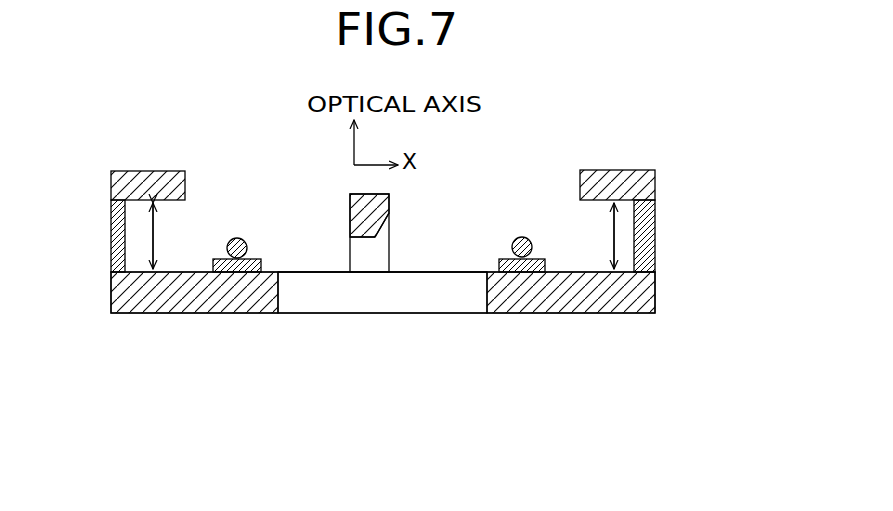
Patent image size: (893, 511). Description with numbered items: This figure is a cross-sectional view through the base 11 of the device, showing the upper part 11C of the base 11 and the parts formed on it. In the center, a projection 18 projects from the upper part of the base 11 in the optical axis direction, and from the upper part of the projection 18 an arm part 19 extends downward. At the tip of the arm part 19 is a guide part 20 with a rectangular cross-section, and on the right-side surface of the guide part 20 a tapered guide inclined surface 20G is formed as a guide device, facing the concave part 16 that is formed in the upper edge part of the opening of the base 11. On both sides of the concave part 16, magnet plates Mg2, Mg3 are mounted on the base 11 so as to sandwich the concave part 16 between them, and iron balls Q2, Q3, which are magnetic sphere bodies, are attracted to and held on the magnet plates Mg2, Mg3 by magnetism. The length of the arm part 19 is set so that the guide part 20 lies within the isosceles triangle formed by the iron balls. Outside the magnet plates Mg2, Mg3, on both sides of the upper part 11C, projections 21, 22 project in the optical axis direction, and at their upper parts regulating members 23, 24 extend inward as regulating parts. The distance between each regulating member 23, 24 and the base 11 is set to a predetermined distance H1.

The base 11 is at (660, 288).
The upper part of the base 11C is at (448, 267).
The concave part 16 is at (453, 293).
The projection 18 is at (363, 257).
The arm part 19 is at (352, 193).
The guide part 20 is at (357, 213).
The guide inclined surface 20G is at (389, 225).
The projection 21 is at (110, 258).
The projection 22 is at (645, 243).
The regulating member 23 is at (152, 171).
The regulating member 24 is at (628, 170).
The predetermined distance H1 is at (150, 233).
The magnet plate Mg2 is at (238, 272).
The magnet plate Mg3 is at (520, 272).
The iron ball Q2 is at (236, 238).
The iron ball Q3 is at (522, 237).